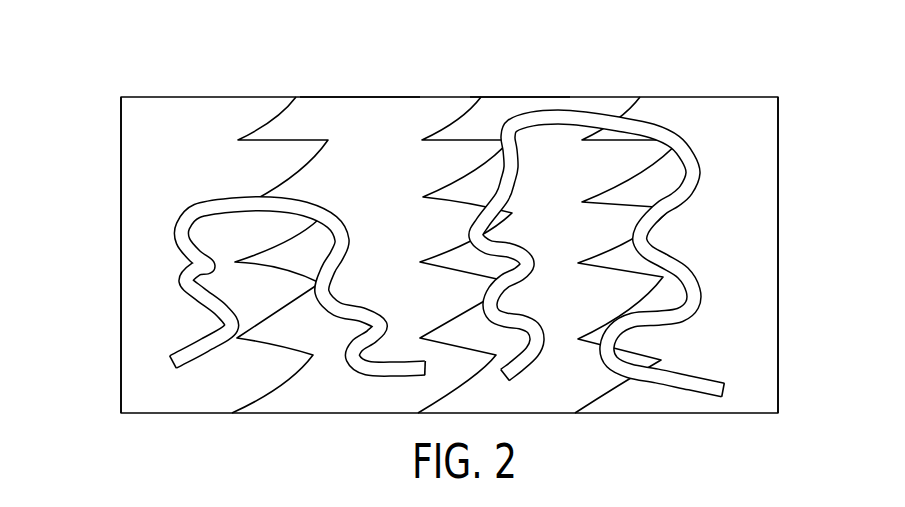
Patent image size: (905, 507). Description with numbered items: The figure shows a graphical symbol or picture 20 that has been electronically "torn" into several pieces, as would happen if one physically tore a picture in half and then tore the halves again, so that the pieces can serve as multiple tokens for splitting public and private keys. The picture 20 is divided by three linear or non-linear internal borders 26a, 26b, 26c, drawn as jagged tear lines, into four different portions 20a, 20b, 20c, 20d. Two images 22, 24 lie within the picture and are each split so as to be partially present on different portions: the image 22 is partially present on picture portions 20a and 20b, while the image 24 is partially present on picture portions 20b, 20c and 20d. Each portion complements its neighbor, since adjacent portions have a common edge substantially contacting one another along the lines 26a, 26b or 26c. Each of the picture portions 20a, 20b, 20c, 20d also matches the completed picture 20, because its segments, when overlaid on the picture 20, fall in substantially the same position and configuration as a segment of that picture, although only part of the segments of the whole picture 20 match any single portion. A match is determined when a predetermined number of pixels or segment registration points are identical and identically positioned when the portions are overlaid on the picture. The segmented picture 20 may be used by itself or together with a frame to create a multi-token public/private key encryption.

The picture 20 is at (207, 58).
The picture portion 20a is at (135, 232).
The picture portion 20b is at (353, 110).
The picture portion 20c is at (512, 110).
The picture portion 20d is at (763, 227).
The image 22 is at (198, 205).
The image 24 is at (683, 134).
The internal border 26a is at (284, 179).
The internal border 26b is at (433, 198).
The internal border 26c is at (632, 237).